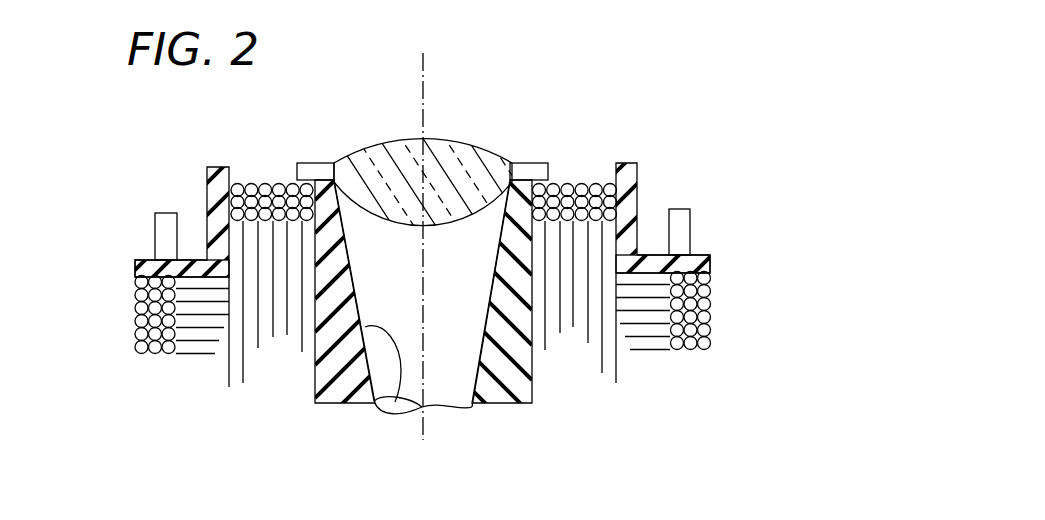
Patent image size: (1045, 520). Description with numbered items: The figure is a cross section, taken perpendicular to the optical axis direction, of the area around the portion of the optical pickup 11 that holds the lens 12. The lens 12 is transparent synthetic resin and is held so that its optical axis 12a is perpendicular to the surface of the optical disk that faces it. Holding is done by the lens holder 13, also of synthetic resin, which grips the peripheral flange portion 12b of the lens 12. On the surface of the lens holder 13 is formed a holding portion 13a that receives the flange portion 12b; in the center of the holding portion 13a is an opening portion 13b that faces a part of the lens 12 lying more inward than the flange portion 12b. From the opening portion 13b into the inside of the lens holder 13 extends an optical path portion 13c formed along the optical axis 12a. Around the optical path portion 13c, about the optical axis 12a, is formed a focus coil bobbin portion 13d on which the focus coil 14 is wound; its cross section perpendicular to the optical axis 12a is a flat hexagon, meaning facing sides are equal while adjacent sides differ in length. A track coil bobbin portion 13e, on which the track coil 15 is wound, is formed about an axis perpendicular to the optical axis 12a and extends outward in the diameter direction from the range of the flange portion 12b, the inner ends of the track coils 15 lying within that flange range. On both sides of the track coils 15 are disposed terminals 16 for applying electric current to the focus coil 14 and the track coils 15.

The optical pickup 11 is at (571, 50).
The lens 12 is at (447, 157).
The optical axis 12a is at (422, 103).
The flange portion 12b is at (535, 166).
The lens holder 13 is at (634, 203).
The holding portion 13a is at (310, 161).
The opening portion 13b is at (452, 242).
The optical path portion 13c is at (395, 402).
The focus coil bobbin portion 13d is at (124, 280).
The track coil bobbin portion 13e is at (249, 170).
The focus coil 14 is at (157, 327).
The track coil 15 is at (283, 308).
The terminal 16 is at (165, 218).